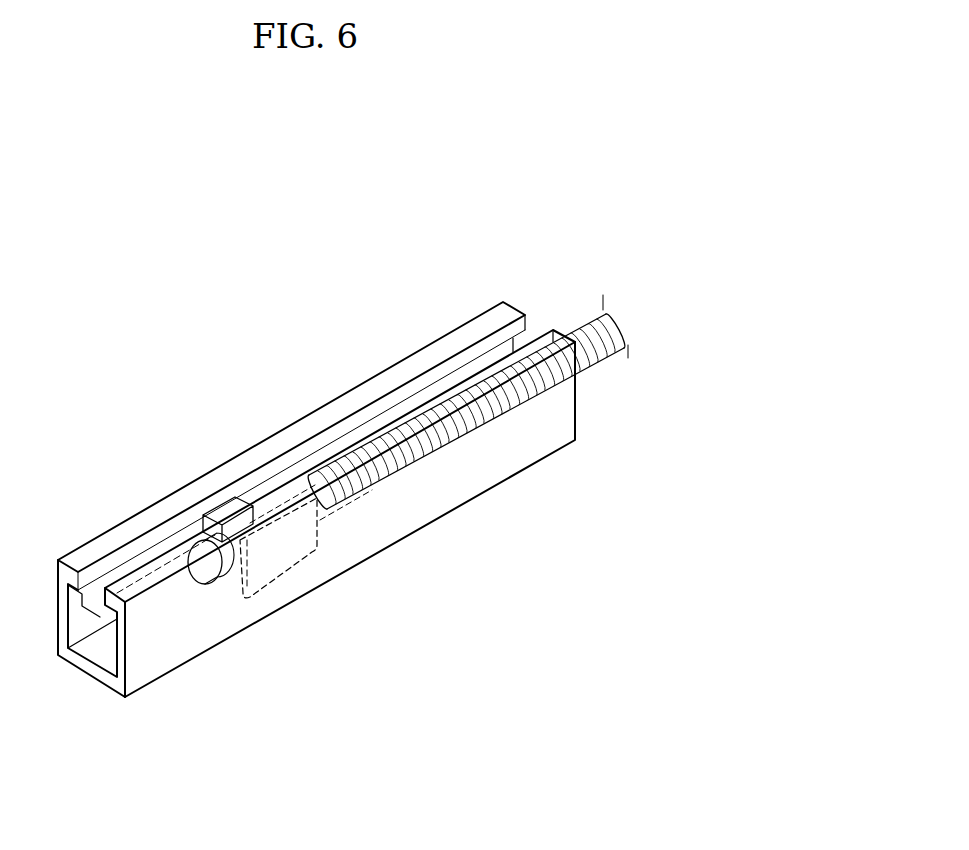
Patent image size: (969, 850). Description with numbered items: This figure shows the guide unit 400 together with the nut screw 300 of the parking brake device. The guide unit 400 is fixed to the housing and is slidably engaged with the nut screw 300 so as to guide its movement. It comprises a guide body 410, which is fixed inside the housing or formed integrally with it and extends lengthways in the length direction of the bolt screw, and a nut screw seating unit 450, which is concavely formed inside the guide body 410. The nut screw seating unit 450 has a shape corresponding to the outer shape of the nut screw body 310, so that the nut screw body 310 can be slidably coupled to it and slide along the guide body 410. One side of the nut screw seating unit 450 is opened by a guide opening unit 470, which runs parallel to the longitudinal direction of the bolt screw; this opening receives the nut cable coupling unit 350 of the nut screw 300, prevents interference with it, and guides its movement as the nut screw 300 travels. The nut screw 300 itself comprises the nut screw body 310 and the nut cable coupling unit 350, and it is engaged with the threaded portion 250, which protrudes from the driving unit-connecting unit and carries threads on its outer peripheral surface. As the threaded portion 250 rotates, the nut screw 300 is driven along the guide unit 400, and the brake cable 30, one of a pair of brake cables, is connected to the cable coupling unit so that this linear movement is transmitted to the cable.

The guide unit 400 is at (307, 512).
The guide body 410 is at (213, 622).
The guide opening unit 470 is at (130, 552).
The nut screw seating unit 450 is at (79, 607).
The nut screw 300 is at (207, 387).
The nut screw body 310 is at (272, 488).
The nut cable coupling unit 350 is at (235, 488).
The brake cable 30 is at (192, 528).
The threaded portion 250 is at (582, 323).